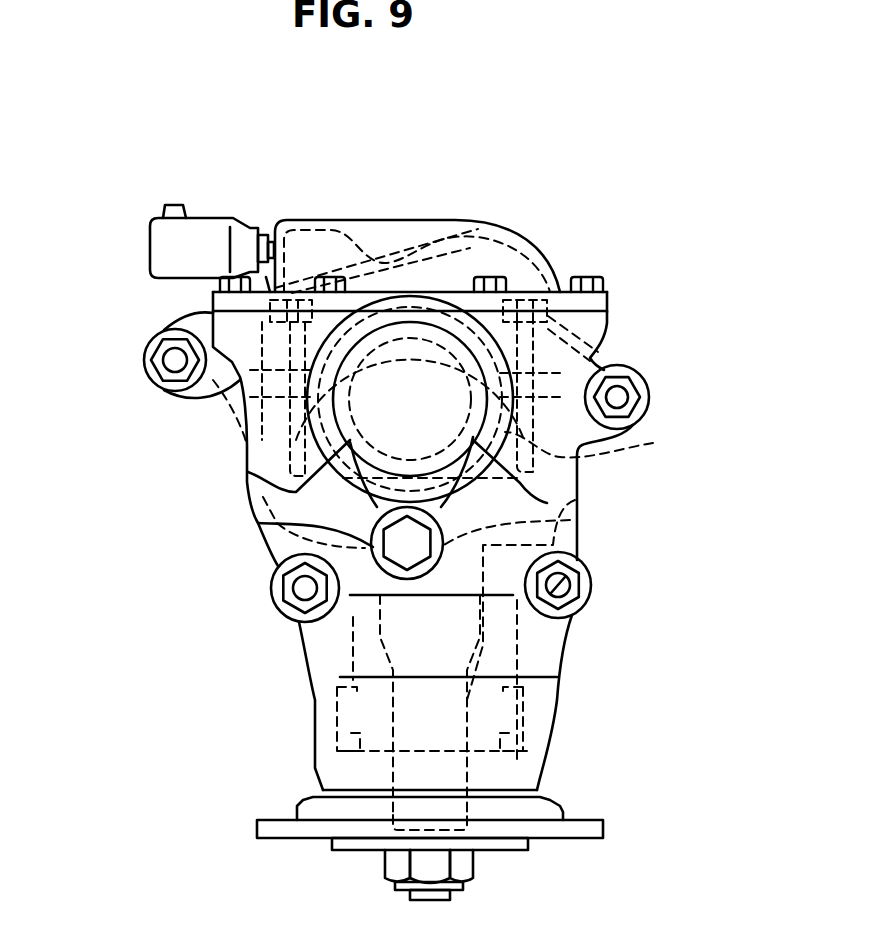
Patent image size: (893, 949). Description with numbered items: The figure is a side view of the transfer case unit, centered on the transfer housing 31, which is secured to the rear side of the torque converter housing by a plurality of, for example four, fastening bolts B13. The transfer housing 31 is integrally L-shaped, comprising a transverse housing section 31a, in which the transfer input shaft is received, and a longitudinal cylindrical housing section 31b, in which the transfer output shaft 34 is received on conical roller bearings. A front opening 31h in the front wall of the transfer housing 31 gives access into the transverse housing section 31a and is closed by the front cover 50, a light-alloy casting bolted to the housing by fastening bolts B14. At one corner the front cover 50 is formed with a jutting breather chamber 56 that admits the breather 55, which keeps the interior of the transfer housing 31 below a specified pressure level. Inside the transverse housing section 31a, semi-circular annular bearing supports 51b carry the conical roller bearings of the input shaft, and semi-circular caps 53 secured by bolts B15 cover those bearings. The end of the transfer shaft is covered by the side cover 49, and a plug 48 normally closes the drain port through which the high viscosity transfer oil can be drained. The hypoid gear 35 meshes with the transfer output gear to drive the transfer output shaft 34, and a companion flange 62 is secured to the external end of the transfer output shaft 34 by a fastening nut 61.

The transfer housing 31 is at (560, 707).
The front opening 31h is at (614, 300).
The transverse housing section 31a is at (247, 500).
The longitudinal cylindrical housing section 31b is at (313, 723).
The front cover 50 is at (438, 220).
The breather 55 is at (210, 218).
The breather chamber 56 is at (320, 220).
The semi-circular caps 53 is at (407, 282).
The fastening bolts B14 is at (220, 284).
The bolts B15 is at (213, 314).
The fastening bolts B13 is at (152, 378).
The plug 48 is at (397, 542).
The side cover 49 is at (248, 472).
The semi-circular annular bearing support 51b is at (634, 442).
The hypoid gear 35 is at (575, 500).
The transfer output shaft 34 is at (567, 653).
The companion flange 62 is at (603, 826).
The fastening nut 61 is at (467, 873).